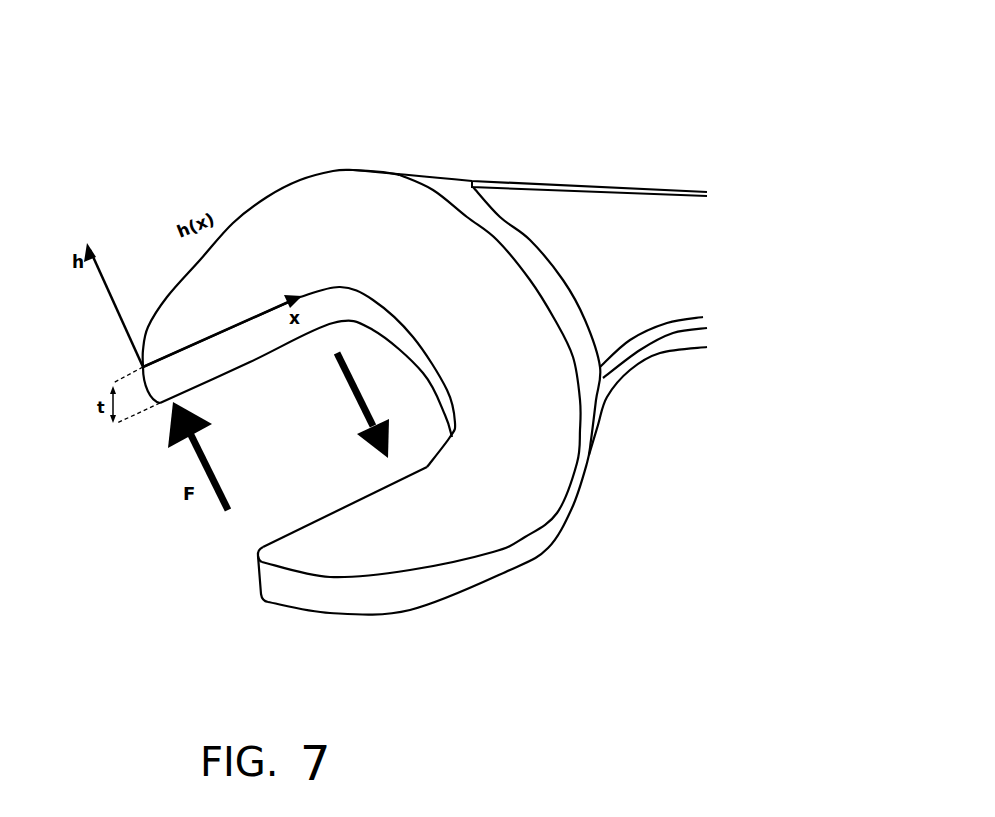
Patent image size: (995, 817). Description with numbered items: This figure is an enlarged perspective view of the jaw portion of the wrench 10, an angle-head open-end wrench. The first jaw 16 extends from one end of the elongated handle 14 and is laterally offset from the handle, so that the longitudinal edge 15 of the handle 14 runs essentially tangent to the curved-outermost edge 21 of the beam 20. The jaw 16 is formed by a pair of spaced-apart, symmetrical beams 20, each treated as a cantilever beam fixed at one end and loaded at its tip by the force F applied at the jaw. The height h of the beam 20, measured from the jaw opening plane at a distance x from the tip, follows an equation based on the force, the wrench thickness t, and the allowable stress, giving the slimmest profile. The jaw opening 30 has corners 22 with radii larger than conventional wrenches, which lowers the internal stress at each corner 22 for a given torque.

The wrench 10 is at (514, 94).
The handle 14 is at (683, 217).
The longitudinal edge 15 is at (630, 187).
The first jaw 16 is at (367, 187).
The beam 20 is at (252, 260).
The curved-outermost edge 21 is at (345, 170).
The corner 22 is at (358, 305).
The jaw opening 30 is at (303, 430).